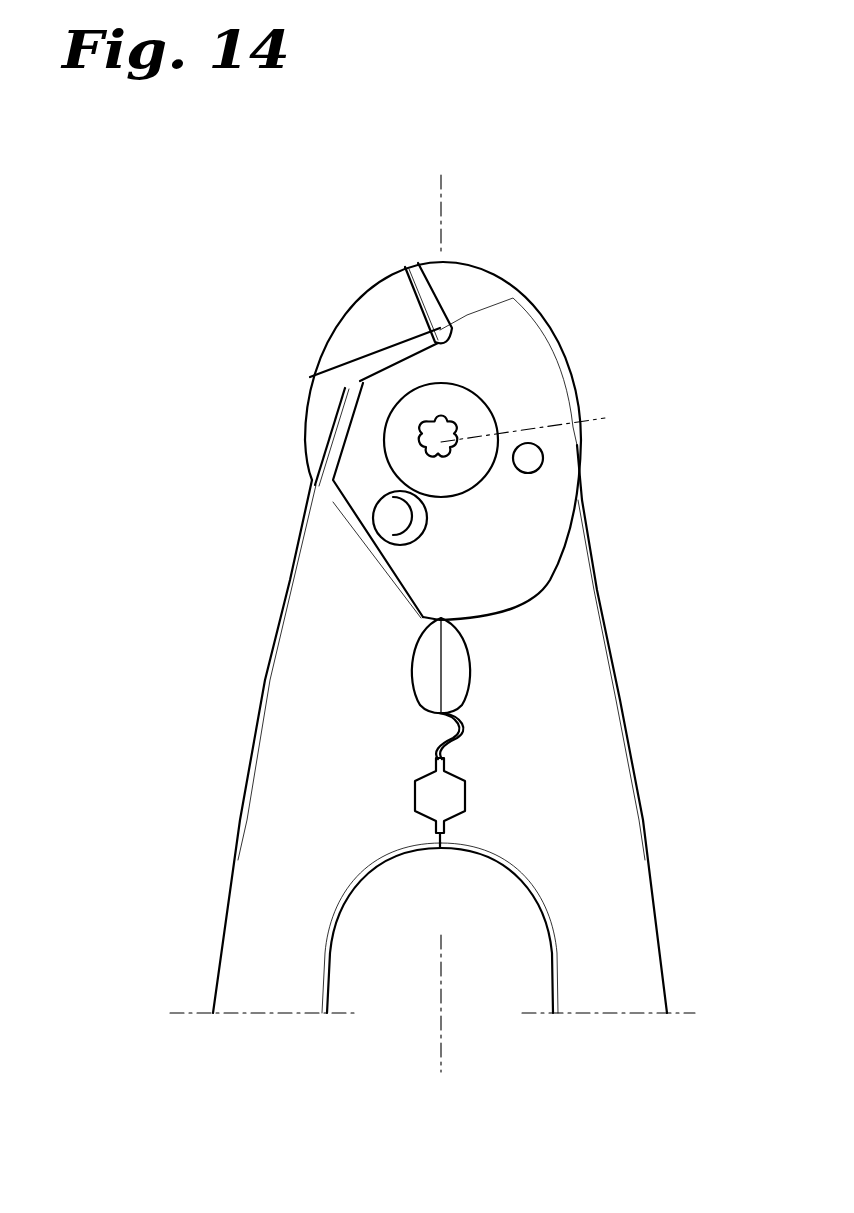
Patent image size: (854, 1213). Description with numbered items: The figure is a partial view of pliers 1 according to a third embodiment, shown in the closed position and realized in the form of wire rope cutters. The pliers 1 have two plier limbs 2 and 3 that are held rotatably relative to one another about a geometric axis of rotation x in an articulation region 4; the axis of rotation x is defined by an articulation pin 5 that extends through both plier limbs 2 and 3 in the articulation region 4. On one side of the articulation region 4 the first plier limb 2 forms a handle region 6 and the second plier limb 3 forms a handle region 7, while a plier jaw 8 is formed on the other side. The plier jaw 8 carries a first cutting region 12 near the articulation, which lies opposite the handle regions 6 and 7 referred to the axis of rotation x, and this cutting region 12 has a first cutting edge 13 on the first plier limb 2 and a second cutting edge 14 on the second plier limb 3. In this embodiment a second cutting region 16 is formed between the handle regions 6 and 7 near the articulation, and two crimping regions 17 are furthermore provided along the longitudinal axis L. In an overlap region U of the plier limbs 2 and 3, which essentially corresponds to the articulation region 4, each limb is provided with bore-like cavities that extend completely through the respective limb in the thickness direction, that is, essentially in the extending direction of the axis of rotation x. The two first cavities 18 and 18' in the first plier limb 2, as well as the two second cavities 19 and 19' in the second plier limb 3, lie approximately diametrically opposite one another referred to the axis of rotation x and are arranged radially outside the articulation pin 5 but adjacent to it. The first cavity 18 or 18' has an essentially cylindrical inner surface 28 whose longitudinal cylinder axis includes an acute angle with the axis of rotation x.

The pliers 1 is at (588, 280).
The first plier limb 2 is at (585, 888).
The second plier limb 3 is at (283, 882).
The articulation region 4 is at (515, 400).
The articulation pin 5 is at (458, 408).
The handle region 6 is at (613, 975).
The handle region 7 is at (260, 983).
The plier jaw 8 is at (345, 293).
The cutting region 12 is at (405, 322).
The first cutting edge 13 is at (440, 305).
The second cutting edge 14 is at (310, 377).
The second cutting region 16 is at (455, 665).
The crimping regions 17 is at (477, 738).
The first cavity 18 is at (616, 531).
The first cavity 18' is at (308, 561).
The second cavity 19 is at (594, 458).
The second cavity 19' is at (322, 497).
The cylindrical inner surface 28 is at (532, 460).
The overlap region U is at (468, 528).
The geometric axis of rotation x is at (532, 420).
The longitudinal axis L is at (432, 622).